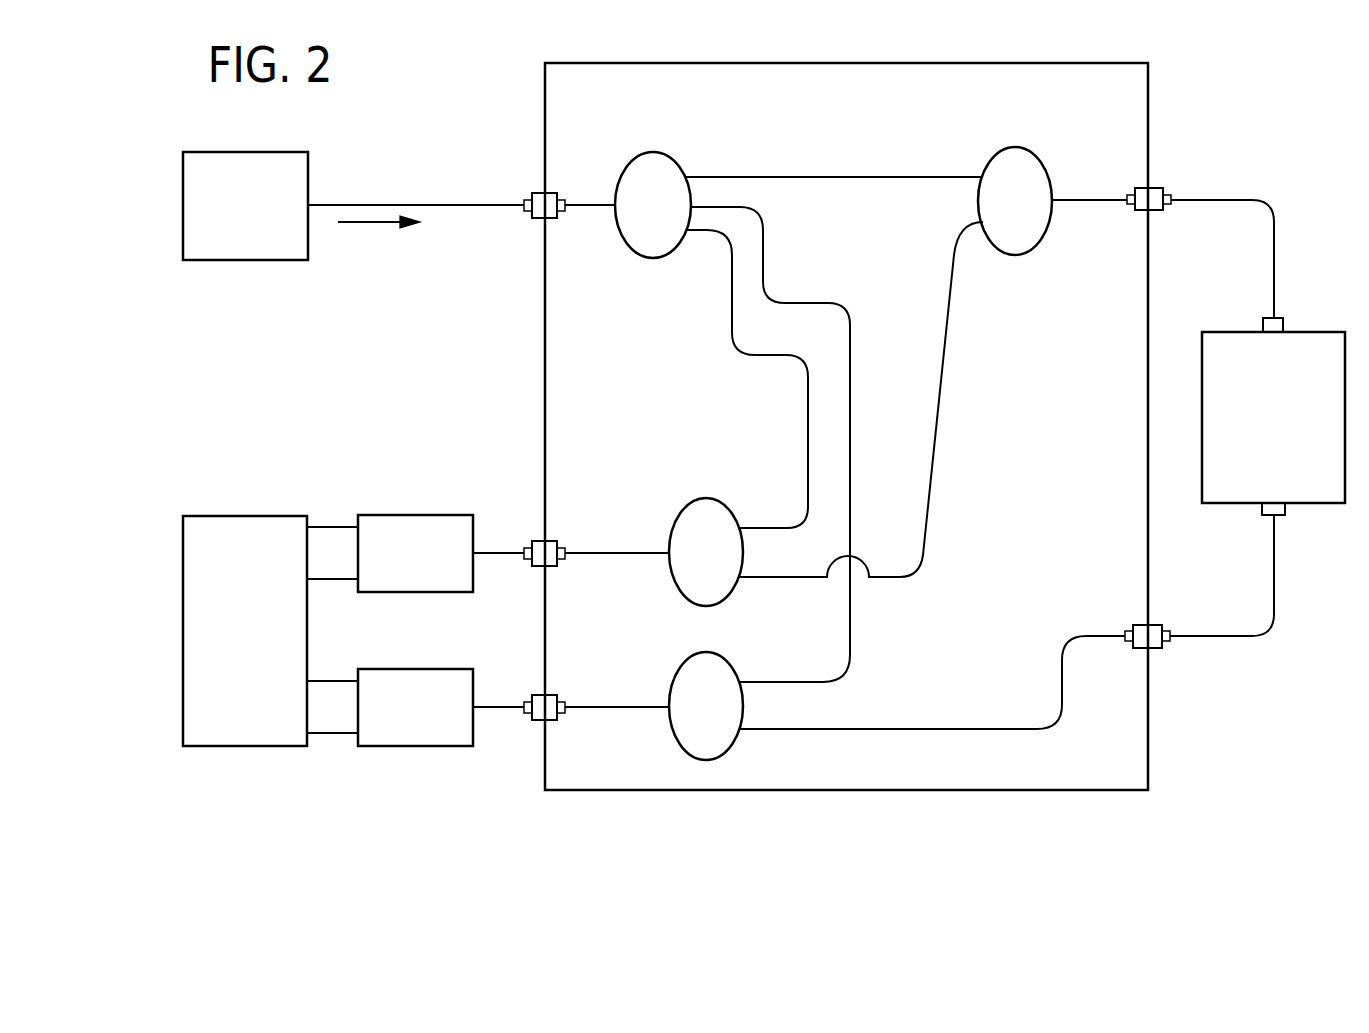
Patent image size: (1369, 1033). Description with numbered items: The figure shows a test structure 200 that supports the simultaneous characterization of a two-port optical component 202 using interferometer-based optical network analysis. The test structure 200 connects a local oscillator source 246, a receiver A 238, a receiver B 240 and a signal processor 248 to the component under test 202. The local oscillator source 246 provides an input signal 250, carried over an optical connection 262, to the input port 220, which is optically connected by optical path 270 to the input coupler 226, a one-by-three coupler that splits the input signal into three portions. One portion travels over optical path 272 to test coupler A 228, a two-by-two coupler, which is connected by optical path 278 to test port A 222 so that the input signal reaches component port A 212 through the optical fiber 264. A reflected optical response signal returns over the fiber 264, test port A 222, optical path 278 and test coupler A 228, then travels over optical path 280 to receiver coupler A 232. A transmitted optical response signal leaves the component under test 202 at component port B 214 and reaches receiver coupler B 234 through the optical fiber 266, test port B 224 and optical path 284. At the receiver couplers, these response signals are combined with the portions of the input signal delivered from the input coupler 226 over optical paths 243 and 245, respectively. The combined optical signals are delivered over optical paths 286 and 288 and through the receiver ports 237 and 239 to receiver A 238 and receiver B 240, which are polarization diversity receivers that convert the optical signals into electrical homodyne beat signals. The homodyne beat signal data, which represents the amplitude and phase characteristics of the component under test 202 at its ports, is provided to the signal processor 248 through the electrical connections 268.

The test structure 200 is at (796, 63).
The optical component 202 is at (1222, 332).
The component port A 212 is at (1286, 323).
The port B connector of component under test 214 is at (1286, 512).
The input port 220 is at (533, 193).
The test port A 222 is at (1162, 188).
The test port B 224 is at (1160, 650).
The input coupler 226 is at (654, 258).
The test coupler A 228 is at (1013, 147).
The receiver coupler A 232 is at (690, 598).
The receiver coupler B 234 is at (690, 752).
The first receiver port 237 is at (532, 574).
The receiver A 238 is at (385, 515).
The second receiver port 239 is at (532, 726).
The receiver B 240 is at (385, 669).
The optical path 243 is at (757, 357).
The optical path 245 is at (810, 303).
The local oscillator source 246 is at (255, 262).
The signal processor 248 is at (205, 516).
The input signal 250 is at (378, 268).
The input cable 262 is at (340, 205).
The optical fiber 264 is at (1275, 237).
The optical fiber 266 is at (1273, 596).
The electrical connections 268 is at (333, 527).
The optical path 270 is at (588, 205).
The optical path 272 is at (855, 177).
The optical path 278 is at (1090, 202).
The optical path 280 is at (950, 283).
The optical path 284 is at (963, 729).
The optical path 286 is at (635, 552).
The optical path 288 is at (637, 707).